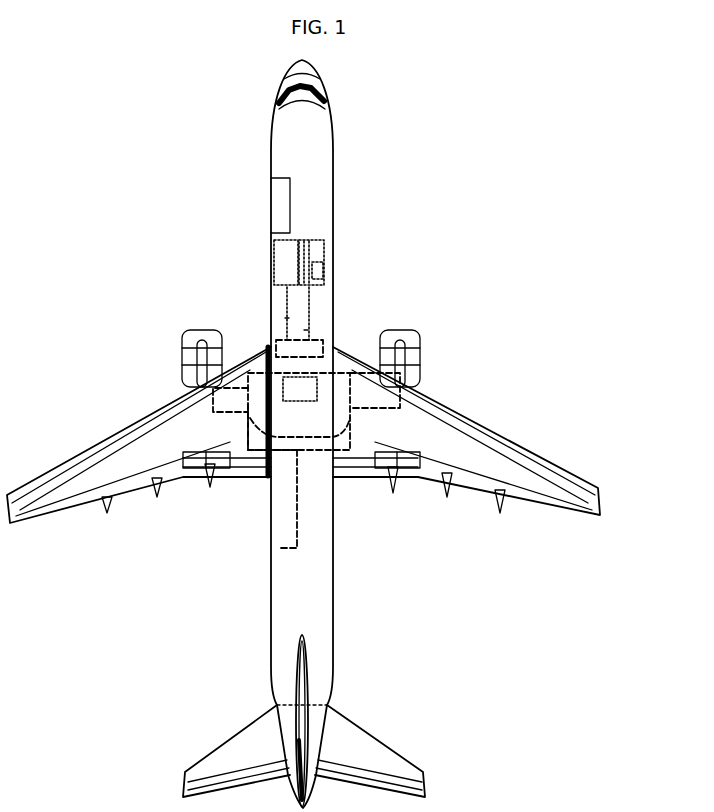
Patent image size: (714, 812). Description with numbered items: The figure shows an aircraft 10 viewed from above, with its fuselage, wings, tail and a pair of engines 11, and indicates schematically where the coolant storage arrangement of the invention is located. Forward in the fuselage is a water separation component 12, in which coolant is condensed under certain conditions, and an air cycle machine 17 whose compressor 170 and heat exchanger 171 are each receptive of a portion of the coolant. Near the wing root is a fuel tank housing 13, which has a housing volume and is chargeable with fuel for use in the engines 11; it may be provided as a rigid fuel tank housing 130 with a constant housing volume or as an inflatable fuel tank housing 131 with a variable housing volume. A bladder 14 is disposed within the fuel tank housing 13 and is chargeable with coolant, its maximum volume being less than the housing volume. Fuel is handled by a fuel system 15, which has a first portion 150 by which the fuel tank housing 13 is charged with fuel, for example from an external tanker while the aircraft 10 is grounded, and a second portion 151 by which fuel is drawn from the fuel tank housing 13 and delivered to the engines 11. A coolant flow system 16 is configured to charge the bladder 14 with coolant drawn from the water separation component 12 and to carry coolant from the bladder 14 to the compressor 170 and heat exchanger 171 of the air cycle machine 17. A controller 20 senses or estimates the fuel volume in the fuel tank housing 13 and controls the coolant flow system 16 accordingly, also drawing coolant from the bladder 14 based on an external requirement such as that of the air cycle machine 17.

The aircraft 10 is at (272, 108).
The engine 11 is at (192, 330).
The water separation component 12 is at (276, 262).
The fuel tank housing 13 is at (248, 430).
The rigid fuel tank housing 130 is at (257, 450).
The inflatable fuel tank housing 131 is at (320, 438).
The bladder 14 is at (283, 387).
The fuel system 15 is at (213, 411).
The second portion 151 is at (401, 403).
The coolant flow system 16 is at (306, 330).
The air cycle machine 17 is at (323, 253).
The compressor 170 is at (312, 248).
The heat exchanger 171 is at (318, 272).
The controller 20 is at (280, 338).
The first portion 150 is at (303, 535).